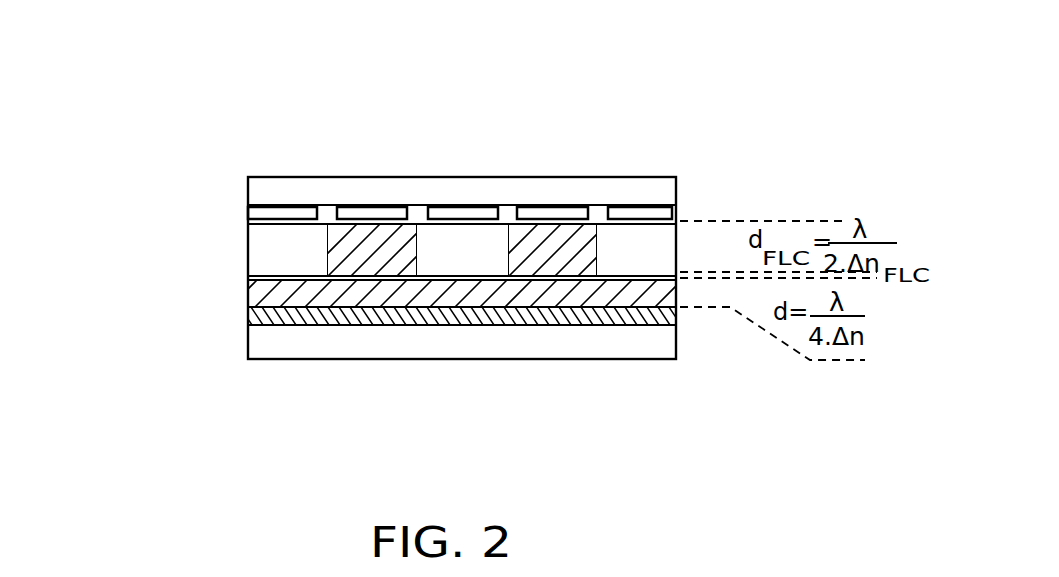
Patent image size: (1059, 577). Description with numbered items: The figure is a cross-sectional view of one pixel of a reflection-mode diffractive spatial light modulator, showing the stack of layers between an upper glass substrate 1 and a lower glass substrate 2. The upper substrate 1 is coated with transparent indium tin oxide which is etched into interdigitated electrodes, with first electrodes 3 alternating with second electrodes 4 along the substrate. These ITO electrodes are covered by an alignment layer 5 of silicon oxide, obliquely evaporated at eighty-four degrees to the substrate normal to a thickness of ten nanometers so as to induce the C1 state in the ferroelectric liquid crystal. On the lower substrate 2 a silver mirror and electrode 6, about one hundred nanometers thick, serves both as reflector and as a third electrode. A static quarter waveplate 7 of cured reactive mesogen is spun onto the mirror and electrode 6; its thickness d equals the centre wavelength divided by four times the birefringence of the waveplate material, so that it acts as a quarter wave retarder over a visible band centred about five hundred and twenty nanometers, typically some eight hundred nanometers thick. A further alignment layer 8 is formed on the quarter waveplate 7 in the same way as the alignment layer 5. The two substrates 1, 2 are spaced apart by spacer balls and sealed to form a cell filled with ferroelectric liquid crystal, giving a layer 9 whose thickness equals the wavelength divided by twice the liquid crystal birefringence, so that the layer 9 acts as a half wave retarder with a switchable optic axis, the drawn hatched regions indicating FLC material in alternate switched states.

The upper glass substrate 1 is at (268, 136).
The lower glass substrate 2 is at (670, 338).
The first electrode 3 is at (543, 203).
The second electrode 4 is at (485, 203).
The alignment layer 5 is at (670, 212).
The mirror and electrode 6 is at (637, 318).
The static quarter waveplate 7 is at (532, 293).
The further alignment layer 8 is at (384, 278).
The ferroelectric liquid crystal layer 9 is at (265, 272).